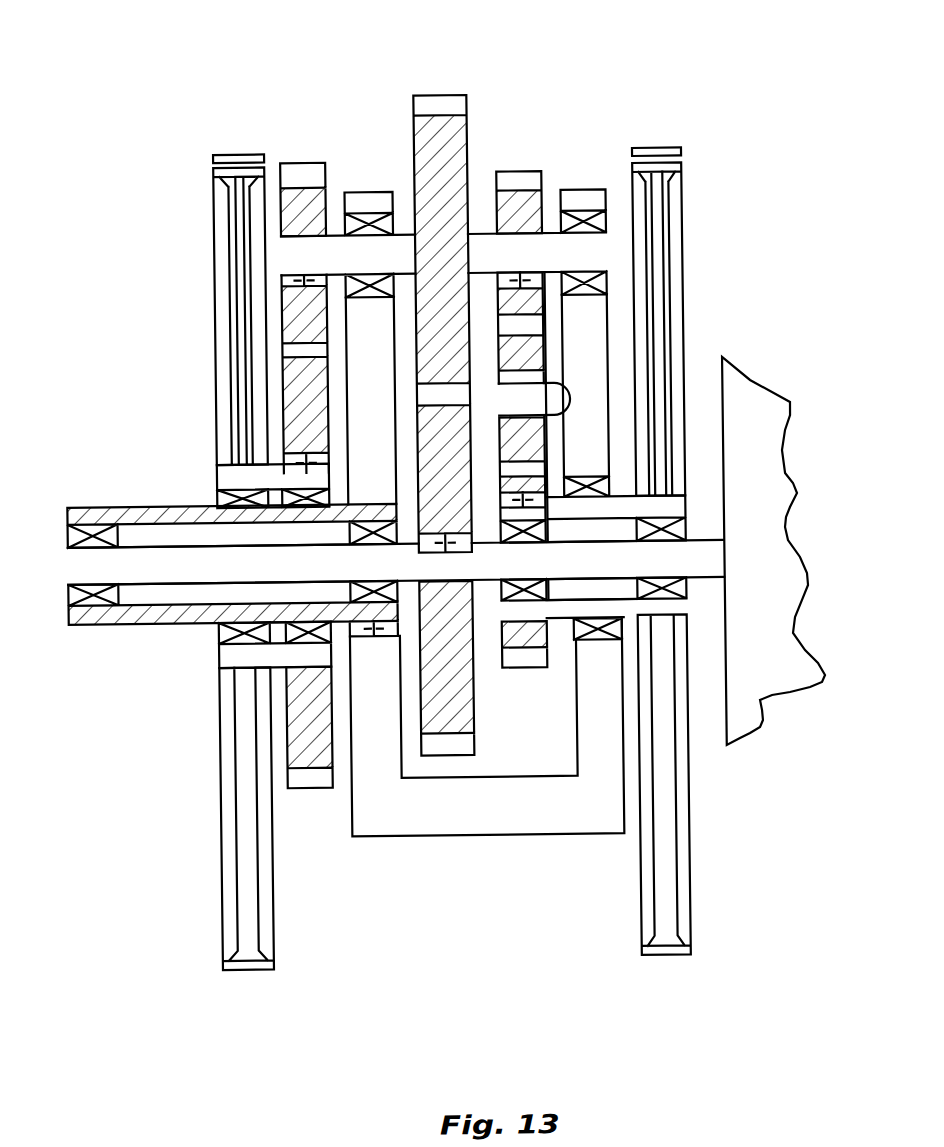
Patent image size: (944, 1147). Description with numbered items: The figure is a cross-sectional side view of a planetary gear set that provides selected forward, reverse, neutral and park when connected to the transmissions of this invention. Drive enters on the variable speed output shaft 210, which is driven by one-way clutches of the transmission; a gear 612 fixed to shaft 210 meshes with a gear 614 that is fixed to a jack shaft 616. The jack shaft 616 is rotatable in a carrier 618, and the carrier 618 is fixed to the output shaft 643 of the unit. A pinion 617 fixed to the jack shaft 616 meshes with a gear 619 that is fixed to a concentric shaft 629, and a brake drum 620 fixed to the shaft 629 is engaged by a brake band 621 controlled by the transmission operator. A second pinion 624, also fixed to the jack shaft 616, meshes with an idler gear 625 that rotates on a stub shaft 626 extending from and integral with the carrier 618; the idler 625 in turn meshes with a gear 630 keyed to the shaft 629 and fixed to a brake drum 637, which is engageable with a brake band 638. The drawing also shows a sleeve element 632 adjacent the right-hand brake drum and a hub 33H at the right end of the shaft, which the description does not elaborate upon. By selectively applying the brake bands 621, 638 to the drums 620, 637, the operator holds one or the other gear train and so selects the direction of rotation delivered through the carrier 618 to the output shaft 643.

The variable speed output shaft 210 is at (160, 559).
The gear 612 is at (448, 748).
The gear 614 is at (434, 102).
The jack shaft 616 is at (441, 252).
The pinion 617 is at (310, 166).
The carrier 618 is at (604, 315).
The gear 619 is at (302, 396).
The brake drum 620 is at (243, 245).
The brake band 621 is at (235, 152).
The pinion 624 is at (527, 180).
The idler gear 625 is at (549, 441).
The stub shaft 626 is at (547, 394).
The concentric shaft 629 is at (229, 470).
The gear 630 is at (531, 658).
The sleeve 632 is at (621, 609).
The brake drum 637 is at (686, 206).
The brake band 638 is at (668, 149).
The output shaft 643 is at (151, 611).
The hub 33H is at (757, 448).